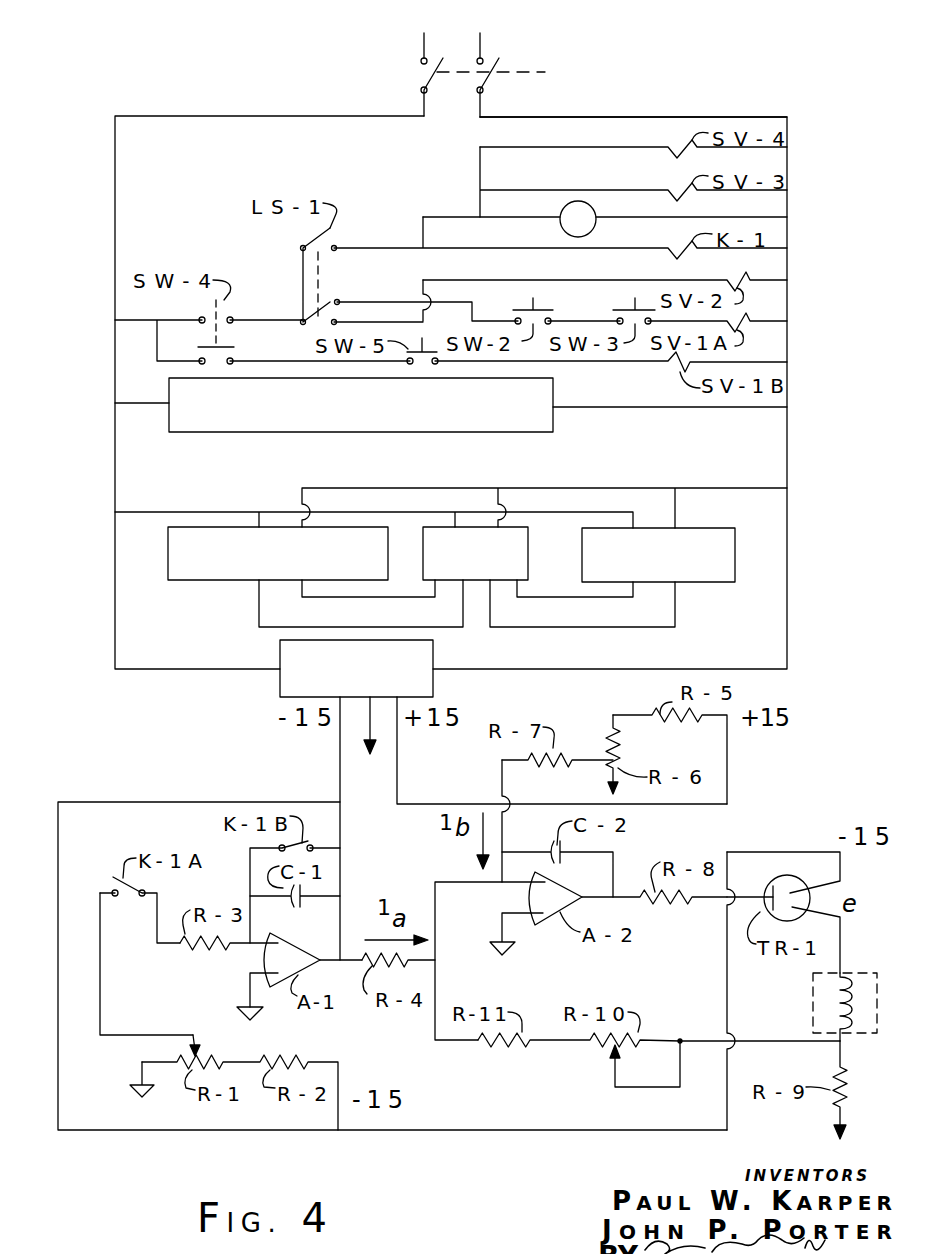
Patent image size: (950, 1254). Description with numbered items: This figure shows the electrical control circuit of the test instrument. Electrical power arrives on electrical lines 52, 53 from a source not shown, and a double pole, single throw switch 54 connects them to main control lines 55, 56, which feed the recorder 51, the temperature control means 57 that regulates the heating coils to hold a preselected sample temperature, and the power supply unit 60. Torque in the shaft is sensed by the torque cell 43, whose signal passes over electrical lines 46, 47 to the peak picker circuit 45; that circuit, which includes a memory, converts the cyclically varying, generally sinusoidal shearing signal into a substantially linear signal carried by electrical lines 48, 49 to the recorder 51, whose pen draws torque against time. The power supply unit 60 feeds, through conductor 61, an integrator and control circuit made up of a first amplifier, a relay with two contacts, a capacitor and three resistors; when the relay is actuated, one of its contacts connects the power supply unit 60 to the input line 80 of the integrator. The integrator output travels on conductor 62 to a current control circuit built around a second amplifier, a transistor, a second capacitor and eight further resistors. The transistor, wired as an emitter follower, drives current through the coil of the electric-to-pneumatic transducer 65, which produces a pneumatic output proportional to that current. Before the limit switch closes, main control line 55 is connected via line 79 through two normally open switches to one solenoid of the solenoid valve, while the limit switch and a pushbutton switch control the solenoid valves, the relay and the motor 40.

The motor 40 is at (562, 228).
The torque cell 43 is at (195, 582).
The peak picker circuit 45 is at (478, 581).
The electrical line 46 is at (357, 597).
The electrical line 47 is at (265, 630).
The electrical line 48 is at (572, 598).
The electrical line 49 is at (662, 628).
The recorder 51 is at (717, 583).
The electrical line 52 is at (423, 36).
The electrical line 53 is at (481, 42).
The double pole, single throw switch 54 is at (540, 73).
The main control line 55 is at (280, 114).
The main control line 56 is at (633, 117).
The temperature control means 57 is at (535, 432).
The power supply unit 60 is at (280, 690).
The conductor 61 is at (59, 831).
The conductor 62 is at (353, 963).
The electric-to-pneumatic transducer 65 is at (848, 972).
The line 79 is at (403, 300).
The input line 80 is at (102, 1008).